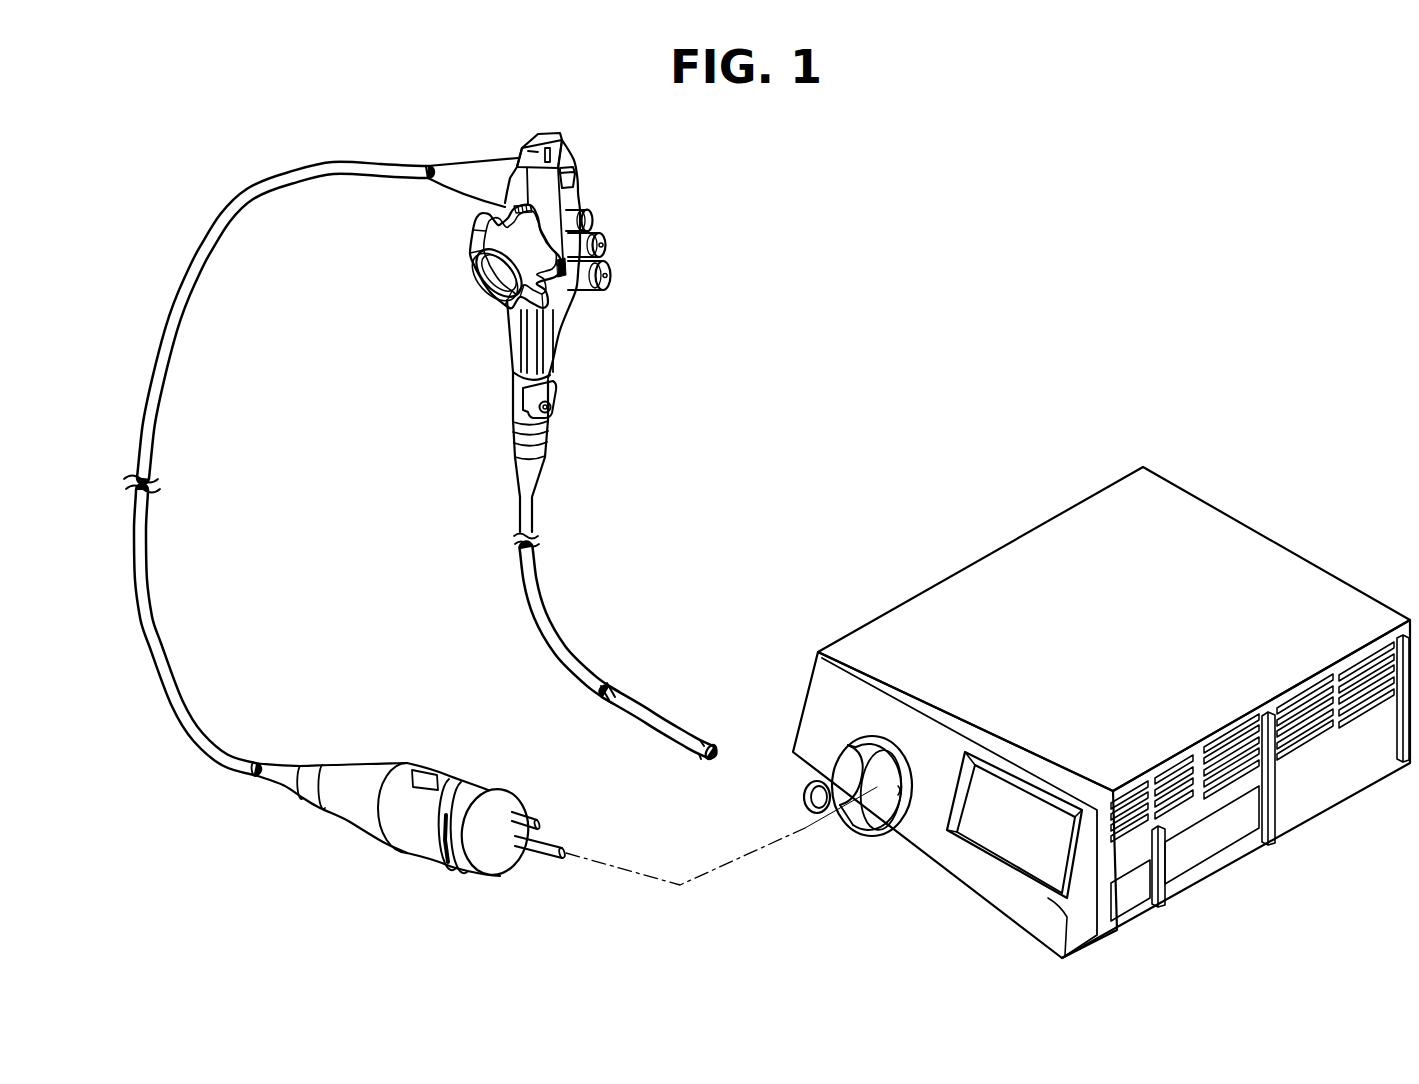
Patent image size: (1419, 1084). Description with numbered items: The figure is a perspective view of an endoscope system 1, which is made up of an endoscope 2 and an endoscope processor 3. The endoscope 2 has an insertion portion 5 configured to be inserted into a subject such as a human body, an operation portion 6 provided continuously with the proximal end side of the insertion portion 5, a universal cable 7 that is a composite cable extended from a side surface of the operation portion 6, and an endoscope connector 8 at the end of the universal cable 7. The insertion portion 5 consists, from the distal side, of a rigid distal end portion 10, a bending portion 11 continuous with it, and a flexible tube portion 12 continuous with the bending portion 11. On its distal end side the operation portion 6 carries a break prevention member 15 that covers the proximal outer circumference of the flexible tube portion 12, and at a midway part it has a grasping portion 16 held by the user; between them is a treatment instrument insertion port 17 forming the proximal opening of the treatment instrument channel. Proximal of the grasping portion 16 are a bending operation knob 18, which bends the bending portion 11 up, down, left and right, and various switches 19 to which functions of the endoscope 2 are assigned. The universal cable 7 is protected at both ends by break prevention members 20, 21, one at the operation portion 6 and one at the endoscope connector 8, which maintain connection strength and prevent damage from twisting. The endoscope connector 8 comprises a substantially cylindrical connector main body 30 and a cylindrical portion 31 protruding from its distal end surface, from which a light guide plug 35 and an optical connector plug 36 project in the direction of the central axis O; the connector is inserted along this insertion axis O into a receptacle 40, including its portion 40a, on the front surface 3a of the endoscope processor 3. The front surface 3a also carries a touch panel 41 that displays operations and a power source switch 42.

The endoscope system 1 is at (974, 202).
The endoscope 2 is at (700, 185).
The endoscope processor 3 is at (1068, 459).
The front surface 3a is at (916, 847).
The insertion portion 5 is at (639, 630).
The operation portion 6 is at (640, 362).
The universal cable 7 is at (240, 201).
The endoscope connector 8 is at (460, 733).
The distal end portion 10 is at (720, 721).
The bending portion 11 is at (648, 711).
The flexible tube portion 12 is at (543, 584).
The break prevention member 15 is at (540, 481).
The grasping portion 16 is at (572, 322).
The treatment instrument insertion port 17 is at (558, 406).
The bending operation knob 18 is at (475, 240).
The switches 19 is at (608, 256).
The break prevention member 20 is at (476, 163).
The break prevention member 21 is at (283, 763).
The connector main body 30 is at (425, 767).
The cylindrical portion 31 is at (490, 794).
The light guide plug 35 is at (546, 856).
The optical connector plug 36 is at (538, 825).
The receptacle 40 is at (855, 836).
The engagement portion 40a is at (852, 785).
The touch panel 41 is at (1005, 880).
The power source switch 42 is at (804, 797).
The central axis O is at (681, 881).